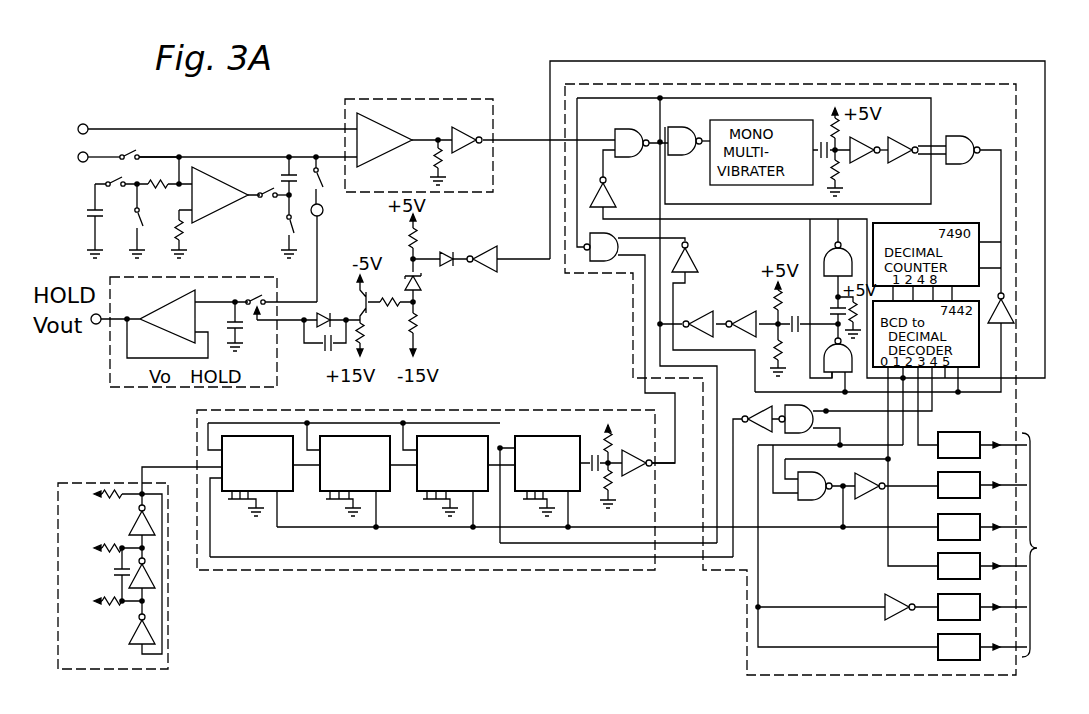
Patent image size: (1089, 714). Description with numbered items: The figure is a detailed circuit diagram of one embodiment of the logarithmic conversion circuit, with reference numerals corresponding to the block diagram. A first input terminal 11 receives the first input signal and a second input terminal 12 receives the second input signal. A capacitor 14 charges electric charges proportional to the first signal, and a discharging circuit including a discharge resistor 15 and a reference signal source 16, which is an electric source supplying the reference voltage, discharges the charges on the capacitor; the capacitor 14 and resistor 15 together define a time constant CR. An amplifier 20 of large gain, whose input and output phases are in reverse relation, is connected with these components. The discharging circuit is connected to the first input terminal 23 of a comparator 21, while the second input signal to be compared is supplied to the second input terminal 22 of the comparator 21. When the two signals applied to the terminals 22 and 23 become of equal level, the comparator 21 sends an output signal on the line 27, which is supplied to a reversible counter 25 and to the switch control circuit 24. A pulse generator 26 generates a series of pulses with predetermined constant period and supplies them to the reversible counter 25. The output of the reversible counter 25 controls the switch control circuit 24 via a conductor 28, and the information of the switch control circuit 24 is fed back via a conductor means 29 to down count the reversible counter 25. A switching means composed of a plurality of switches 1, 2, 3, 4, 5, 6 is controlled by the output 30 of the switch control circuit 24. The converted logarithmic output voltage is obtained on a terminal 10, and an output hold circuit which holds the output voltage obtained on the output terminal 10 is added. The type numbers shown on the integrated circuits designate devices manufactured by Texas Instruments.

The switch 1 is at (129, 152).
The switch 2 is at (121, 190).
The switch 3 is at (286, 231).
The switch 4 is at (262, 200).
The switch 5 is at (325, 178).
The switch 6 is at (142, 229).
The output terminal 10 is at (322, 216).
The first input terminal 11 is at (83, 163).
The second input terminal 12 is at (87, 124).
The capacitor 14 is at (278, 168).
The discharge resistor 15 is at (158, 192).
The reference signal source 16 is at (87, 214).
The amplifier 20 is at (222, 182).
The comparator 21 is at (440, 99).
The second input terminal of the comparator 22 is at (332, 126).
The first input terminal of the comparator 23 is at (315, 162).
The switch control circuit 24 is at (630, 334).
The reversible counter 25 is at (489, 409).
The pulse generator 26 is at (103, 483).
The line 27 is at (523, 143).
The conductor 28 is at (645, 391).
The conductor means 29 is at (694, 529).
The output of the switch control circuit 30 is at (999, 541).